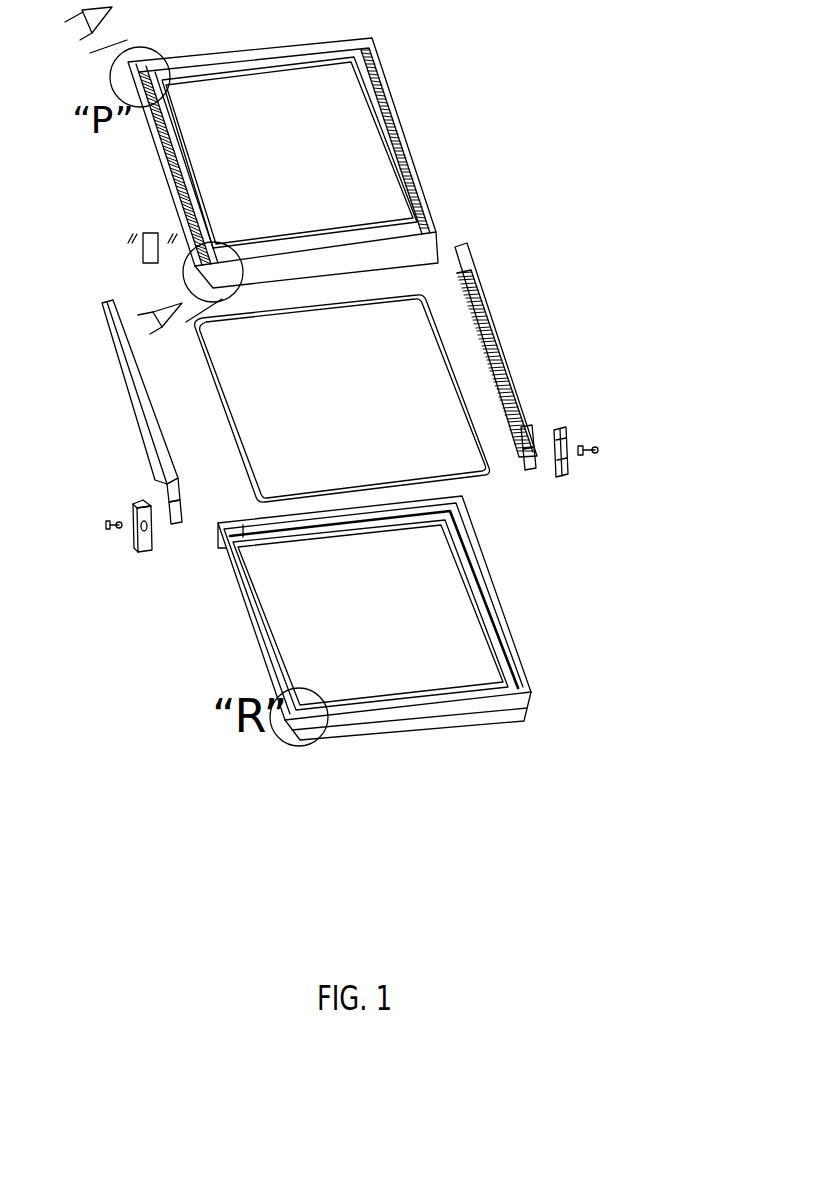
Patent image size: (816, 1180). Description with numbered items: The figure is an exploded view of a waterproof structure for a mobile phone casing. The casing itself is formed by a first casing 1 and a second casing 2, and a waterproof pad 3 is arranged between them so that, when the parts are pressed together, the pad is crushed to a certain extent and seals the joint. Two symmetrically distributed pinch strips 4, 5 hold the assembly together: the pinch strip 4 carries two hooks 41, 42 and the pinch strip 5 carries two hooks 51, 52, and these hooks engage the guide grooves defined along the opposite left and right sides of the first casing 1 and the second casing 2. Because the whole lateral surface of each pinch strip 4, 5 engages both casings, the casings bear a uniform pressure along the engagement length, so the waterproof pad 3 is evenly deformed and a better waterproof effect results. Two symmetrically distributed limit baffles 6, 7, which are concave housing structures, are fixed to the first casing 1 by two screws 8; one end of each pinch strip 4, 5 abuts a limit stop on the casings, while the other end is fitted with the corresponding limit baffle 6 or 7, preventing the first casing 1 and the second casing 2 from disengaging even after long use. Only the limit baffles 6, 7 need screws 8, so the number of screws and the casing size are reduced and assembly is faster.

The first casing 1 is at (398, 127).
The second casing 2 is at (500, 594).
The waterproof pad 3 is at (486, 479).
The pinch strip 4 is at (130, 387).
The hook 41 is at (170, 480).
The hook 42 is at (175, 523).
The pinch strip 5 is at (495, 330).
The hook 51 is at (527, 427).
The hook 52 is at (533, 465).
The limit baffle 6 is at (137, 547).
The limit baffle 7 is at (567, 423).
The screw 8 is at (107, 523).